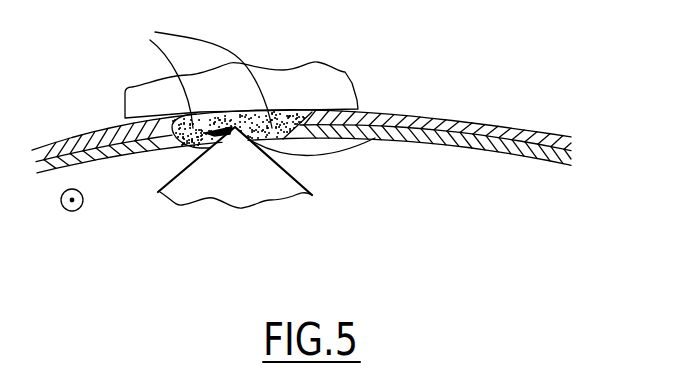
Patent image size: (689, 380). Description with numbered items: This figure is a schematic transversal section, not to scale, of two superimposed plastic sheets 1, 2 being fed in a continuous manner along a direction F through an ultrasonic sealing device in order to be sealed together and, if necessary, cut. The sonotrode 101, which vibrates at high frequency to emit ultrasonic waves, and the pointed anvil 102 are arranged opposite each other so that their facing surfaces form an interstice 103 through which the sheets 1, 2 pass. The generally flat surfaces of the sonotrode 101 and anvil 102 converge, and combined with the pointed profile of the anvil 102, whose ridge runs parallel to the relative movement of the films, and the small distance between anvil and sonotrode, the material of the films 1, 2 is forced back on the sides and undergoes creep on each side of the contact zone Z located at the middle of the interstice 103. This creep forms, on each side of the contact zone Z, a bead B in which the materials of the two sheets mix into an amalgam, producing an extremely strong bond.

The superimposed sheet 1 is at (525, 140).
The superimposed sheet 2 is at (523, 155).
The sonotrode 101 is at (338, 83).
The anvil 102 is at (286, 191).
The interstice 103 is at (197, 133).
The bead B is at (198, 68).
The contact zone Z is at (410, 114).
The direction F is at (72, 221).